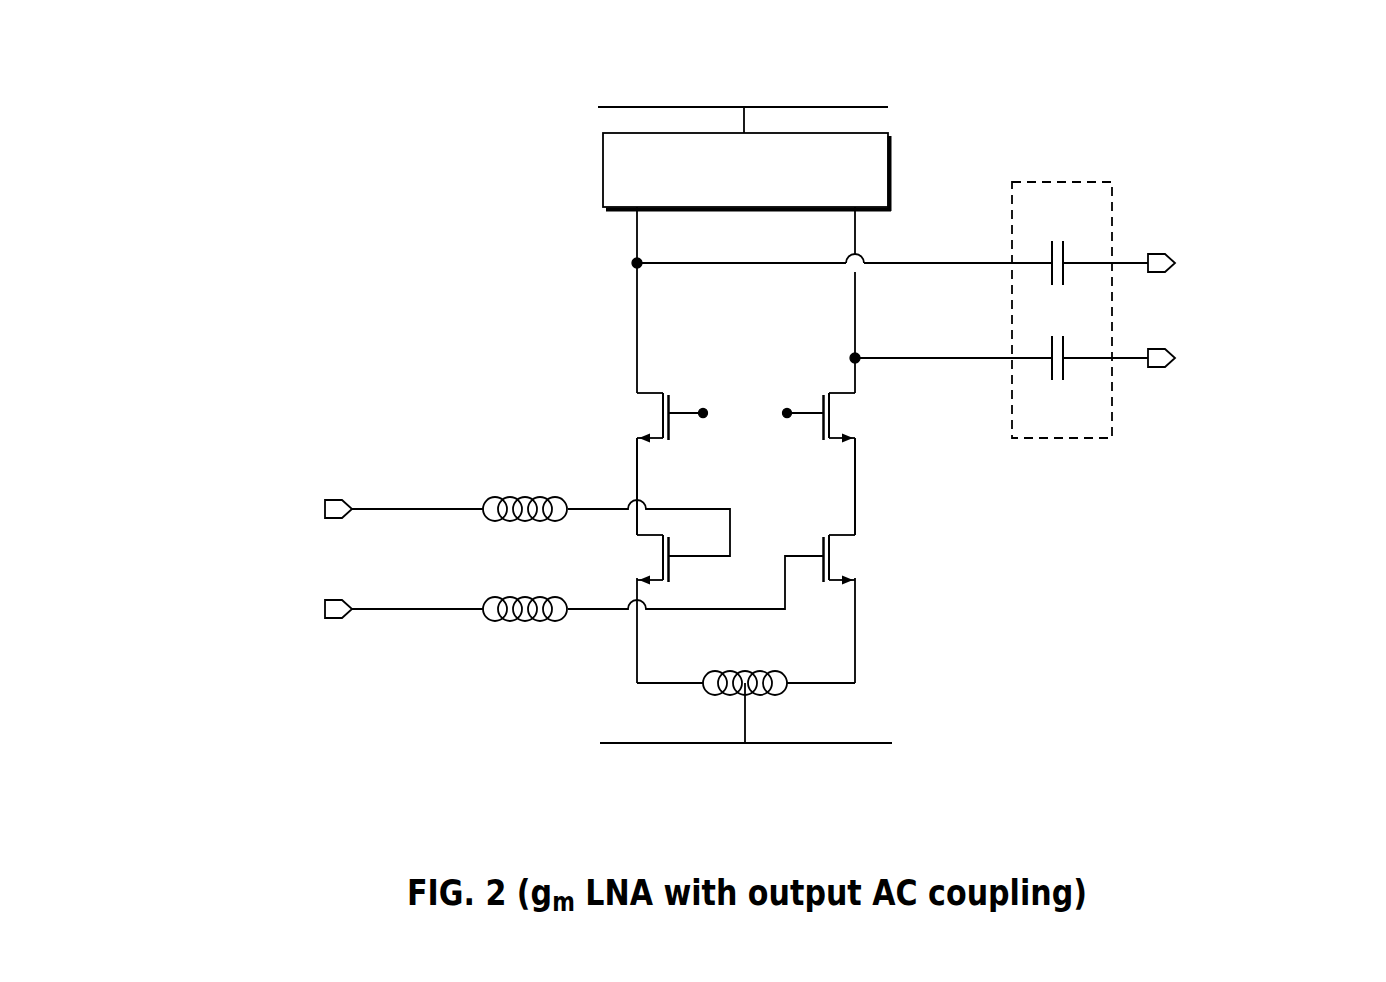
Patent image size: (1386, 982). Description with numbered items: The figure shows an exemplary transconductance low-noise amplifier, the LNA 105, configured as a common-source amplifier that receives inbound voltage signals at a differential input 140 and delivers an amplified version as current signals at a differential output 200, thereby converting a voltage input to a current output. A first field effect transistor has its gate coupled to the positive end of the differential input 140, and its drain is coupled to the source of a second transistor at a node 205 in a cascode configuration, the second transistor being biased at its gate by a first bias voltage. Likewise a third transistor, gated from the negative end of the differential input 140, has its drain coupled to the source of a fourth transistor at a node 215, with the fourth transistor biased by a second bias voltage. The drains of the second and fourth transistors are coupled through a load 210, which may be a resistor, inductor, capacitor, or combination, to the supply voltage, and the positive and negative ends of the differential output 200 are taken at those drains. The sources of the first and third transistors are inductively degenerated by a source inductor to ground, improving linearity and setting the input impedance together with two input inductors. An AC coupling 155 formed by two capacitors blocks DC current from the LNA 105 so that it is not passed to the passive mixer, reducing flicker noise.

The gm LNA 105 is at (332, 796).
The differential input 140 is at (303, 620).
The AC coupling 155 is at (1112, 202).
The differential output 200 is at (1195, 372).
The node 205 is at (637, 476).
The load 210 is at (747, 172).
The node 215 is at (855, 478).